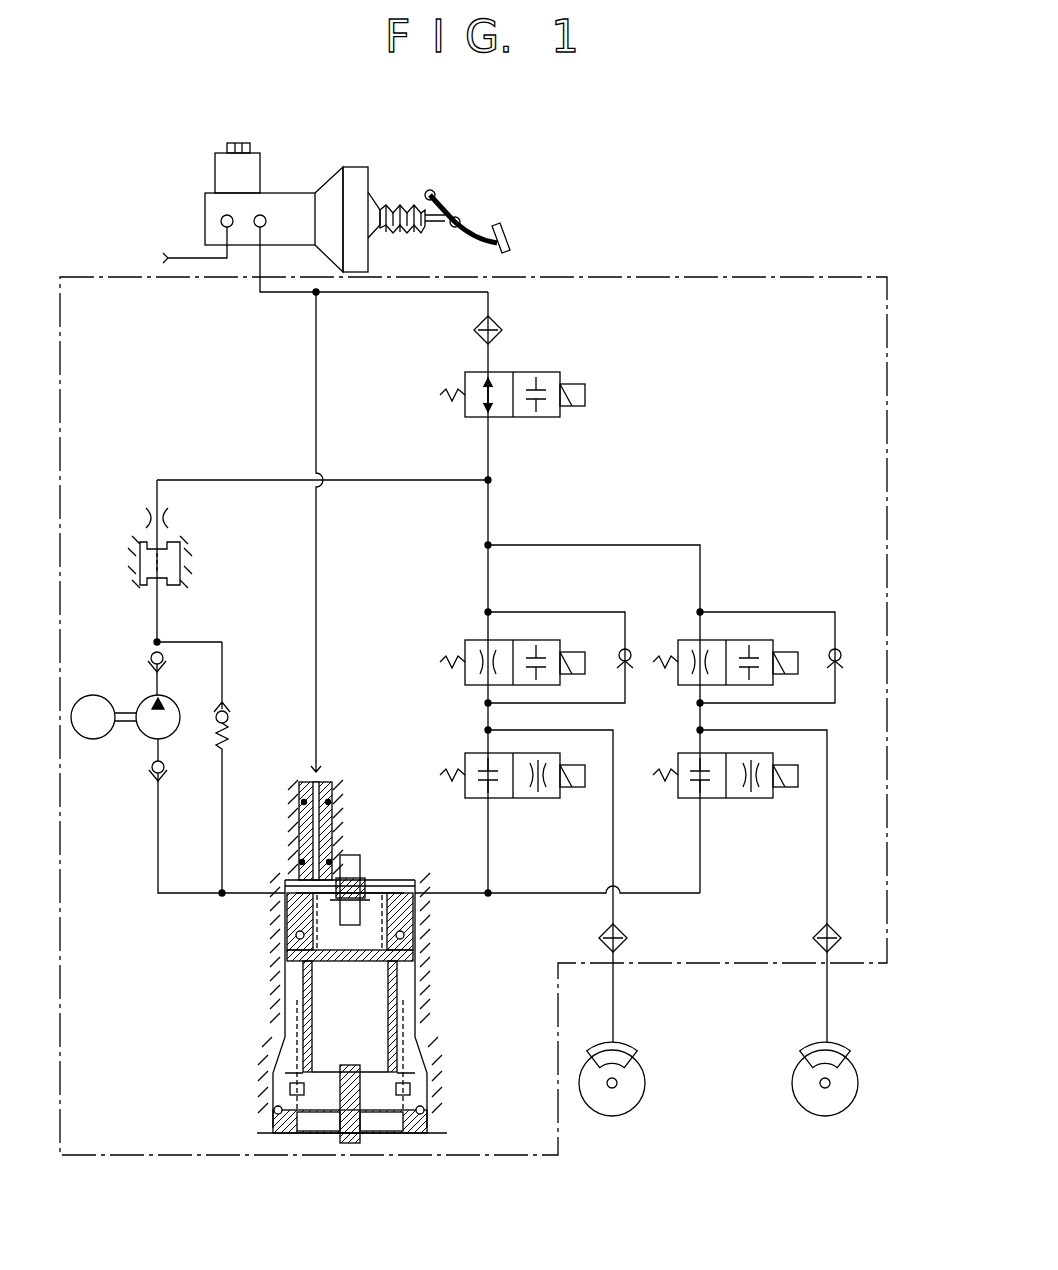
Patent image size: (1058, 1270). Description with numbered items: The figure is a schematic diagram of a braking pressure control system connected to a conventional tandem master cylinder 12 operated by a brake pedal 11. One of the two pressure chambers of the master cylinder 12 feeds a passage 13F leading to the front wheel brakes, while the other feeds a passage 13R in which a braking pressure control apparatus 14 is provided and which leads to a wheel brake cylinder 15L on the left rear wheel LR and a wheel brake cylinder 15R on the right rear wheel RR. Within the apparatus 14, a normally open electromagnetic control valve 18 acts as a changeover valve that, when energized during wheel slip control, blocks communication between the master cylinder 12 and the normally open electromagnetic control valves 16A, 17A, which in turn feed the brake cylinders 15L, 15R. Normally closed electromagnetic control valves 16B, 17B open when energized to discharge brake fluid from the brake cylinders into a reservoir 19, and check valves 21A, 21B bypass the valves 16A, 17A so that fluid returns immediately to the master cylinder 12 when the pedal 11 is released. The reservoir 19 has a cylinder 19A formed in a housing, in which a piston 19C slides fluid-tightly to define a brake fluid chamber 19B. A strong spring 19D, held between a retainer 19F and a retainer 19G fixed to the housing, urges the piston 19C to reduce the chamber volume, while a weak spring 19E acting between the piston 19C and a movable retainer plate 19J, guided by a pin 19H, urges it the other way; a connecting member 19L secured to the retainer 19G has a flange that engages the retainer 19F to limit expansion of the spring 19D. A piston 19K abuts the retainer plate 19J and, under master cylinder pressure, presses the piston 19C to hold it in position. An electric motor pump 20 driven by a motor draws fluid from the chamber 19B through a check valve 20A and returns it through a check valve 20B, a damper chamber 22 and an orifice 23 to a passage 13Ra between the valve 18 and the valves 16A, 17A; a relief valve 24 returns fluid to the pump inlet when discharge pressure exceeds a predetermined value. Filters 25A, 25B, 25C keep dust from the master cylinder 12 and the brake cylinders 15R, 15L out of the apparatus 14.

The brake pedal 11 is at (473, 227).
The tandem master cylinder 12 is at (289, 186).
The passage 13F is at (187, 257).
The passage 13R is at (258, 263).
The passage 13Ra is at (490, 520).
The braking pressure control apparatus 14 is at (721, 278).
The wheel brake cylinder 15L is at (620, 1050).
The wheel brake cylinder 15R is at (832, 1050).
The electromagnetic control valve 16A is at (465, 633).
The electromagnetic control valve 16B is at (465, 755).
The electromagnetic control valve 17A is at (680, 685).
The electromagnetic control valve 17B is at (676, 803).
The electromagnetic control valve 18 is at (527, 420).
The reservoir 19 is at (268, 957).
The cylinder 19A is at (418, 903).
The brake fluid chamber 19B is at (275, 908).
The piston 19C is at (418, 990).
The strong spring 19D is at (275, 1040).
The weak spring 19E is at (382, 865).
The retainer 19F is at (400, 1064).
The retainer 19G is at (415, 1115).
The pin 19H is at (350, 870).
The movable retainer plate 19J is at (410, 877).
The piston 19K is at (298, 835).
The connecting member 19L is at (342, 1130).
The electric motor pump 20 is at (128, 740).
The check valve 20A is at (155, 775).
The check valve 20B is at (152, 652).
The check valve 21A is at (632, 648).
The check valve 21B is at (840, 648).
The damper chamber 22 is at (178, 560).
The orifice 23 is at (172, 518).
The relief valve 24 is at (228, 705).
The filter 25A is at (496, 322).
The filter 25B is at (628, 932).
The filter 25C is at (818, 928).
The left rear wheel LR is at (615, 1117).
The right rear wheel RR is at (830, 1117).